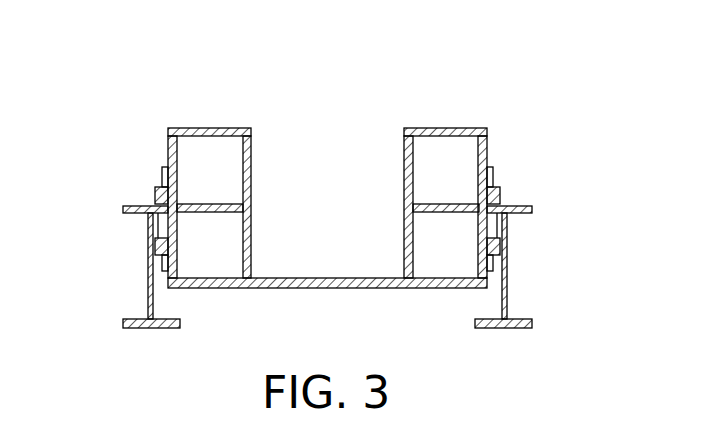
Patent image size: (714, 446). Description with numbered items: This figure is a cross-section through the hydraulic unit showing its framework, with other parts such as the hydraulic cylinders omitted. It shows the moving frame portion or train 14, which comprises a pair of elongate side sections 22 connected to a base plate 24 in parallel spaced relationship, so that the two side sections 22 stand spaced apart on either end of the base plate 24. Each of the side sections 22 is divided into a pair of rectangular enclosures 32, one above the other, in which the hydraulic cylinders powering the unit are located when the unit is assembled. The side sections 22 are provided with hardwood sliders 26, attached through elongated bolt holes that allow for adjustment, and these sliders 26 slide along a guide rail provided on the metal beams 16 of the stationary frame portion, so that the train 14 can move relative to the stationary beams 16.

The moving frame portion or train 14 is at (357, 303).
The metal beams 16 is at (148, 290).
The elongate side sections 22 is at (168, 146).
The base plate 24 is at (277, 290).
The hardwood sliders 26 is at (155, 192).
The rectangular enclosures 32 is at (205, 252).